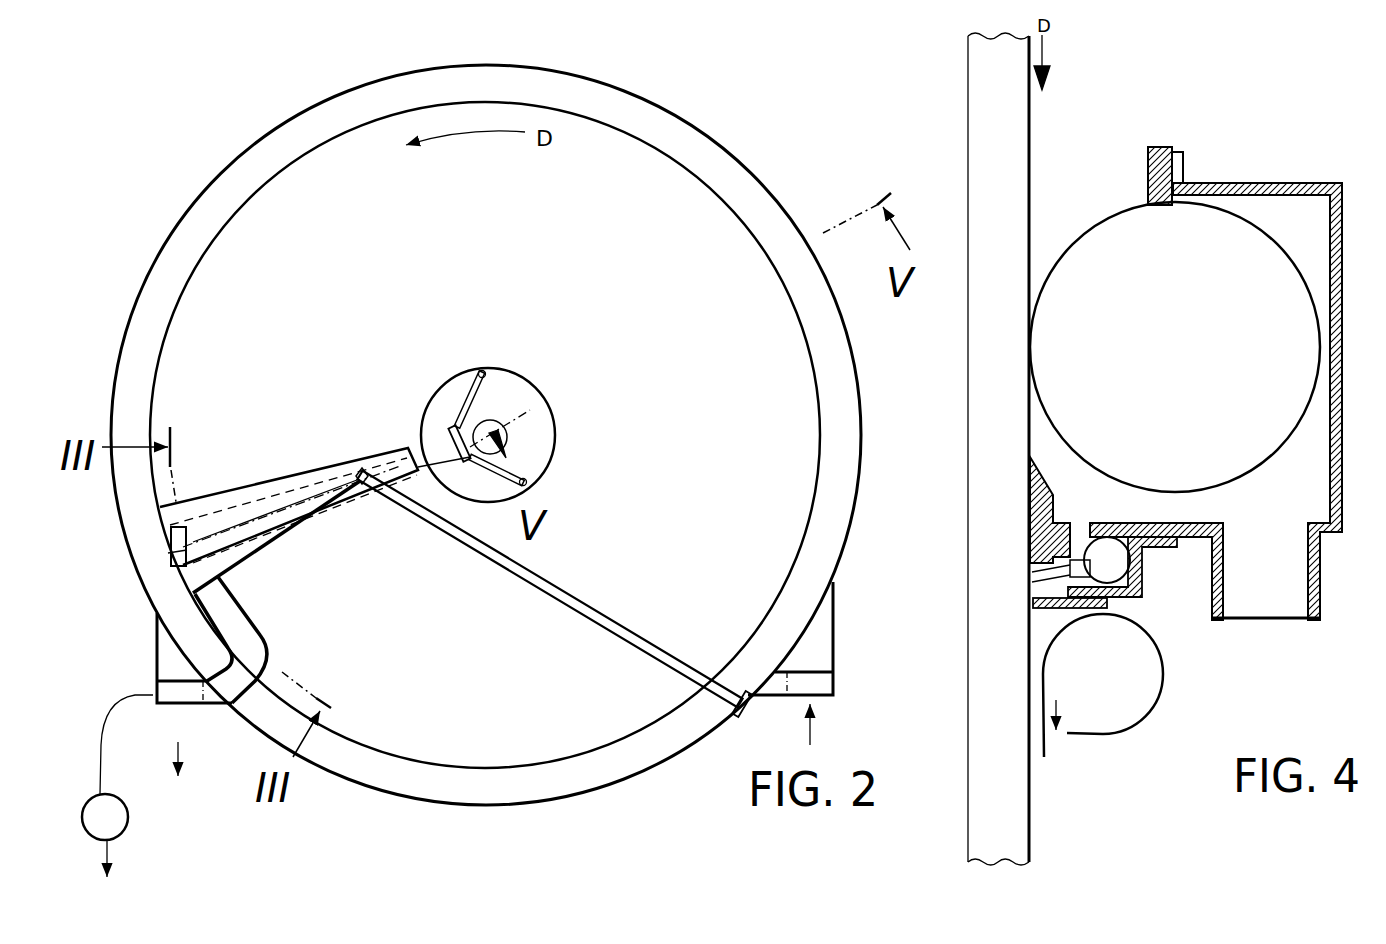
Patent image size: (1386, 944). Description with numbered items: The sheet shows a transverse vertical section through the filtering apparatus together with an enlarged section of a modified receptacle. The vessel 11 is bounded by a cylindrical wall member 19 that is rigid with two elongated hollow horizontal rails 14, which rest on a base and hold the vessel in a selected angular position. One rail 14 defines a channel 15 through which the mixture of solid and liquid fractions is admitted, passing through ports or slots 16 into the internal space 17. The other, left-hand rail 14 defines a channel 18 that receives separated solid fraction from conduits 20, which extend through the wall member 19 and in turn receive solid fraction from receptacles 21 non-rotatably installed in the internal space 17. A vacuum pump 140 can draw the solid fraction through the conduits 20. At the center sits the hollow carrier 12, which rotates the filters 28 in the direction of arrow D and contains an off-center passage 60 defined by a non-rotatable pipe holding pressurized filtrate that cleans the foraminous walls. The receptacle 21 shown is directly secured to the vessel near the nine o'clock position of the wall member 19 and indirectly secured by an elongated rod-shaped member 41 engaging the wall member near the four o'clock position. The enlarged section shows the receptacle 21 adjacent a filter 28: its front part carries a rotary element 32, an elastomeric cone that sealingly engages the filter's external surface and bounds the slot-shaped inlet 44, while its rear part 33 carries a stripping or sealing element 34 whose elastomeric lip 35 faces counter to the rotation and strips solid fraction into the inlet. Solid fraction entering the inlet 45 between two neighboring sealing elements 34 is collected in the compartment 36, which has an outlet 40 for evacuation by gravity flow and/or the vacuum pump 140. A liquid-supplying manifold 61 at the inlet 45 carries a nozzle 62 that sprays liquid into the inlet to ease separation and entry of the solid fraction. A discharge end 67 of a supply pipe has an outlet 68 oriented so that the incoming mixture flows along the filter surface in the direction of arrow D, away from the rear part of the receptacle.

In FIG. 2, the vessel 11 is at (742, 125).
In FIG. 2, the carrier 12 is at (540, 432).
In FIG. 2, the hollow horizontal rail 14 is at (152, 675).
In FIG. 2, the channel 15 is at (820, 683).
In FIG. 2, the port 16 is at (760, 708).
In FIG. 2, the internal space 17 is at (710, 530).
In FIG. 2, the channel 18 is at (182, 697).
In FIG. 2, the cylindrical wall member 19 is at (850, 380).
In FIG. 2, the conduit 20 is at (237, 612).
In FIG. 2, the receptacle 21 is at (313, 470).
In FIG. 4, the receptacle 21 is at (1283, 183).
In FIG. 2, the rod-shaped member 41 is at (577, 598).
In FIG. 2, the passage 60 is at (440, 443).
In FIG. 2, the vacuum pump 140 is at (137, 837).
In FIG. 4, the filter 28 is at (1038, 126).
In FIG. 4, the rotary element 32 is at (1115, 250).
In FIG. 4, the rear part 33 is at (1192, 534).
In FIG. 4, the stripping or sealing element 34 is at (1030, 528).
In FIG. 4, the lip 35 is at (1027, 458).
In FIG. 4, the compartment 36 is at (1258, 215).
In FIG. 4, the outlet 40 is at (1321, 568).
In FIG. 4, the inlet 44 is at (1053, 438).
In FIG. 4, the inlet 45 is at (1047, 588).
In FIG. 4, the liquid-supplying manifold 61 is at (1110, 562).
In FIG. 4, the nozzle 62 is at (1078, 550).
In FIG. 4, the discharge end 67 is at (1166, 664).
In FIG. 4, the outlet 68 is at (1052, 740).